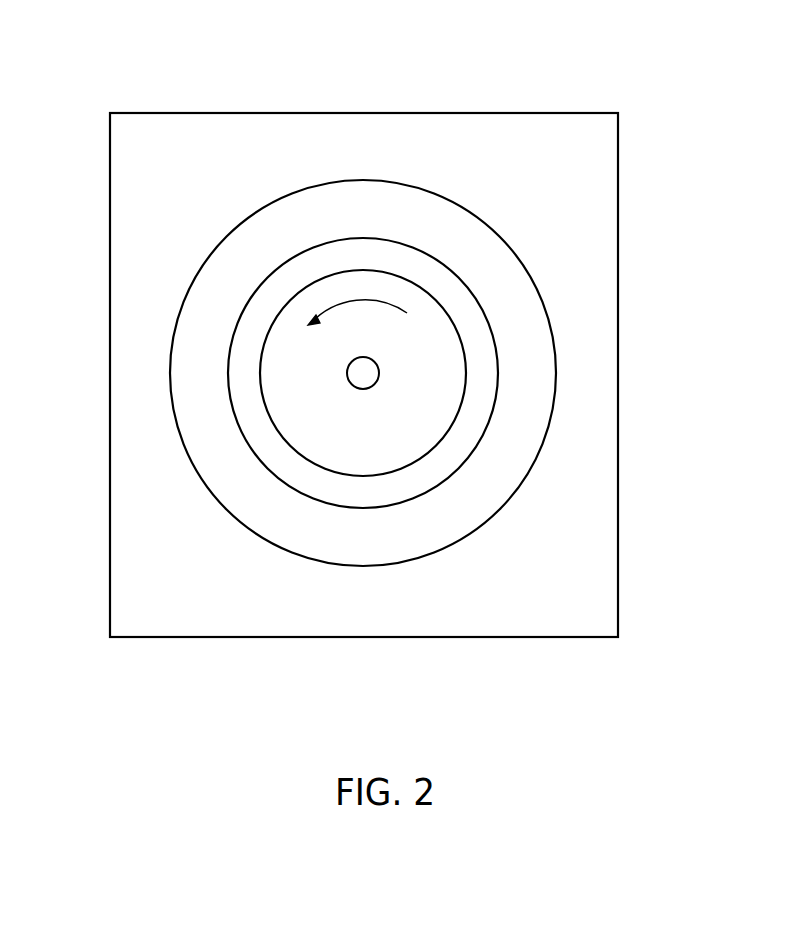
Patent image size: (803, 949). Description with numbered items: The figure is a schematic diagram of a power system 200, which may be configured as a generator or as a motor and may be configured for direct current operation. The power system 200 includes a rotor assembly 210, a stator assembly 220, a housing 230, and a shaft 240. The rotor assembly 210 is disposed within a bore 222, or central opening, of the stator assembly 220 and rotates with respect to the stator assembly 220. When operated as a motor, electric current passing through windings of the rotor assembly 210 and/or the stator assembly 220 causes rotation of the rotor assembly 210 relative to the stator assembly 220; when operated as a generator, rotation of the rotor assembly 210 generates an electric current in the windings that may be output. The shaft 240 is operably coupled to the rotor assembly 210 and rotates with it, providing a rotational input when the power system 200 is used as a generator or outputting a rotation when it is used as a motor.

The power system 200 is at (150, 55).
The rotor assembly 210 is at (440, 385).
The stator assembly 220 is at (490, 255).
The bore 222 is at (467, 332).
The housing 230 is at (433, 112).
The shaft 240 is at (363, 389).